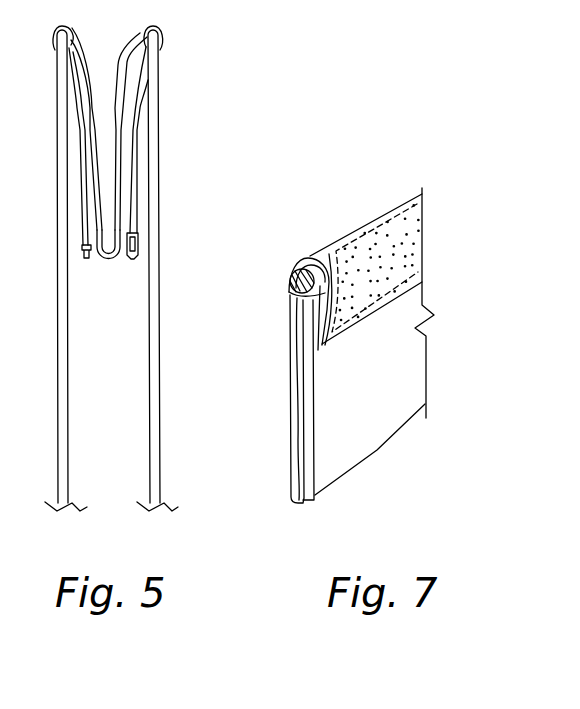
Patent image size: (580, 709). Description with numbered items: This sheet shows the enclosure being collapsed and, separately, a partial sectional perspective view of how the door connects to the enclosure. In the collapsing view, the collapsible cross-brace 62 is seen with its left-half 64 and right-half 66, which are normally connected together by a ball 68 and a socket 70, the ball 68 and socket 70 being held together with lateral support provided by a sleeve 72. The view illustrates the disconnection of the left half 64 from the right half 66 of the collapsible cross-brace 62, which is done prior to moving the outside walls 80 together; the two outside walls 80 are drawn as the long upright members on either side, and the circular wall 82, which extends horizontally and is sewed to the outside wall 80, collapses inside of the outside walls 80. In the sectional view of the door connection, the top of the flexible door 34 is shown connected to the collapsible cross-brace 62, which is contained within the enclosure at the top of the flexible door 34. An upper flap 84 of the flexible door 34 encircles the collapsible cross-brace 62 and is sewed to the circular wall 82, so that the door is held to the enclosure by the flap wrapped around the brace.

In FIG. 7, the flexible door 34 is at (378, 412).
In FIG. 7, the collapsible cross-brace 62 is at (307, 262).
In FIG. 5, the left-half 64 is at (77, 158).
In FIG. 5, the right-half 66 is at (140, 158).
In FIG. 5, the ball 68 is at (132, 262).
In FIG. 5, the socket 70 is at (87, 258).
In FIG. 5, the sleeve 72 is at (138, 240).
In FIG. 5, the outside wall 80 is at (58, 356).
In FIG. 5, the circular wall 82 is at (88, 65).
In FIG. 7, the upper flap 84 is at (380, 313).